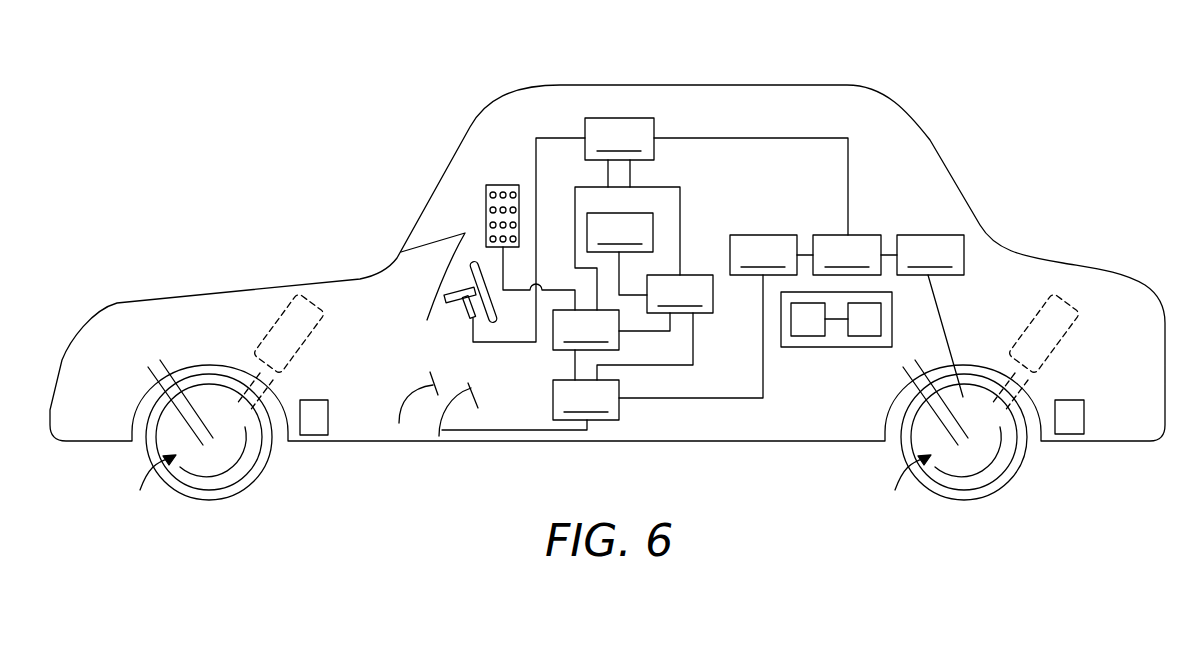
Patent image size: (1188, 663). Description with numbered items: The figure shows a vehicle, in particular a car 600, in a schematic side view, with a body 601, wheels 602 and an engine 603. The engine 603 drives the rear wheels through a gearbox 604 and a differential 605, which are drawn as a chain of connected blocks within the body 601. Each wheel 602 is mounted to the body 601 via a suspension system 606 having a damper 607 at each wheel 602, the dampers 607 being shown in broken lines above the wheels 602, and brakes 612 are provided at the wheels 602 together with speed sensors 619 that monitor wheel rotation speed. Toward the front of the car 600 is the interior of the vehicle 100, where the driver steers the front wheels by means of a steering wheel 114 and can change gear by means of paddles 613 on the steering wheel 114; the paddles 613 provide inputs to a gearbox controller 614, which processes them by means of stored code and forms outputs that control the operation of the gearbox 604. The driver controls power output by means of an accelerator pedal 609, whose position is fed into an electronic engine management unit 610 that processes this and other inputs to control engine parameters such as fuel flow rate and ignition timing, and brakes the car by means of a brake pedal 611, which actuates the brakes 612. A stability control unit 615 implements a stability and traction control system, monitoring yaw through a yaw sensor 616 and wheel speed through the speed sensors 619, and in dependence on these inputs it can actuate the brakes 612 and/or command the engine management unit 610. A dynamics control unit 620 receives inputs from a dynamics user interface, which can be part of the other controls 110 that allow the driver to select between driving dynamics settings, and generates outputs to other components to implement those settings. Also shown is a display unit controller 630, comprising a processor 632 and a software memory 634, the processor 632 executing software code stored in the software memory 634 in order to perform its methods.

The car 600 is at (1012, 113).
The body 601 is at (784, 85).
The vehicle 100 is at (413, 250).
The other controls 110 is at (500, 185).
The steering wheel 114 is at (472, 257).
The paddles 613 is at (467, 319).
The brake pedal 611 is at (406, 400).
The accelerator pedal 609 is at (476, 388).
The gearbox controller 614 is at (716, 176).
The yaw sensor 616 is at (627, 248).
The stability control unit 615 is at (655, 327).
The dynamics control unit 620 is at (611, 345).
The electronic engine management unit 610 is at (602, 352).
The engine 603 is at (771, 255).
The gearbox 604 is at (855, 255).
The differential 605 is at (930, 316).
The display unit controller 630 is at (800, 342).
The processor 632 is at (811, 337).
The software memory 634 is at (866, 337).
The wheels 602 is at (209, 501).
The brakes 612 is at (238, 469).
The suspension system 606 is at (515, 479).
The damper 607 is at (308, 337).
The speed sensors 619 is at (315, 436).